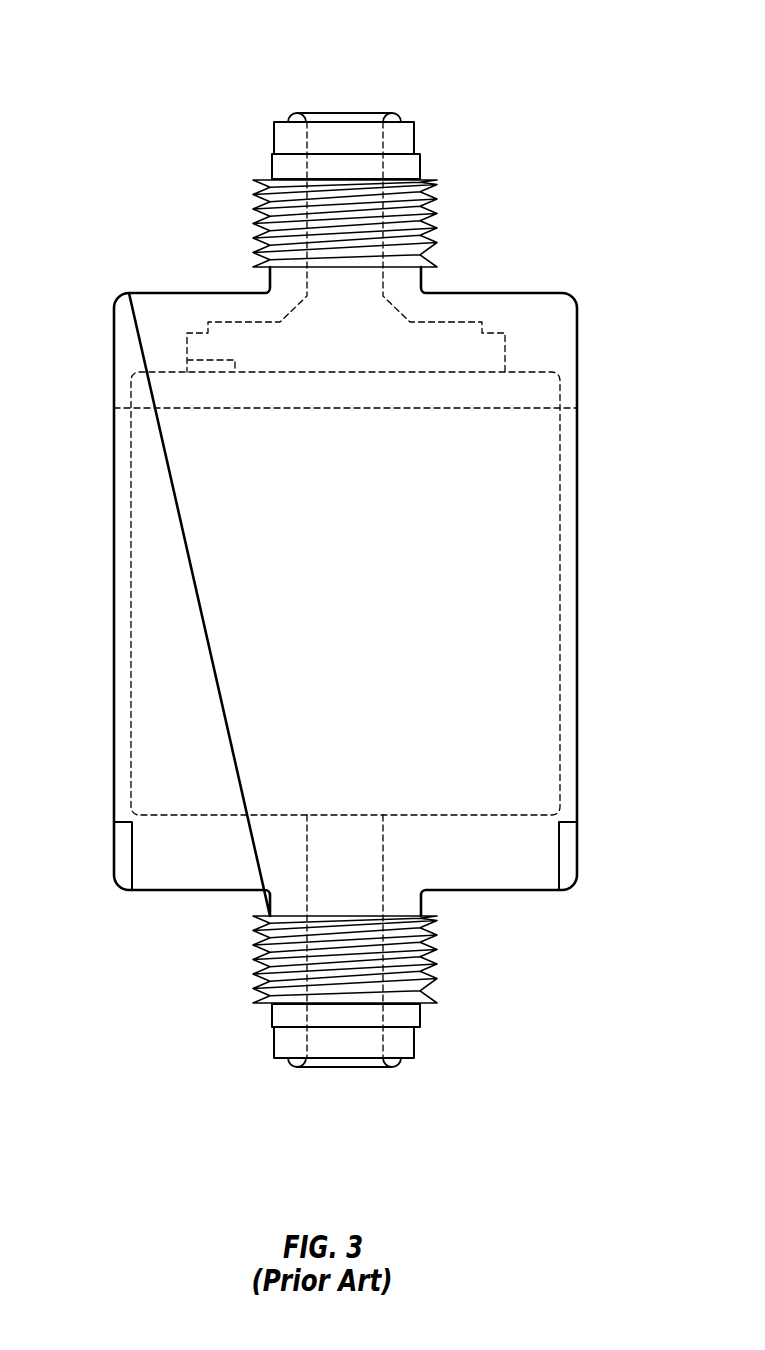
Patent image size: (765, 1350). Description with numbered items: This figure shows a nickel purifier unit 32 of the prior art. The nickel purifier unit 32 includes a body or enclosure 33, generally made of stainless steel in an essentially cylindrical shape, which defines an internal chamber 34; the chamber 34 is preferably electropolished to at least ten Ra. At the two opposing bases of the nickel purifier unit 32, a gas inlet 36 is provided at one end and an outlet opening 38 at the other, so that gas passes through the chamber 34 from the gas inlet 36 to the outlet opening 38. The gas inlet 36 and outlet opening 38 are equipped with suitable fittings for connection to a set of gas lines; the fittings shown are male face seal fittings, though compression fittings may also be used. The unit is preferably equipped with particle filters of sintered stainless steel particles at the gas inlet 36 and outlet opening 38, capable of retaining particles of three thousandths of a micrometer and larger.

The nickel purifier unit 32 is at (321, 584).
The body or enclosure 33 is at (156, 637).
The chamber 34 is at (560, 595).
The gas inlet 36 is at (345, 143).
The outlet opening 38 is at (345, 1042).